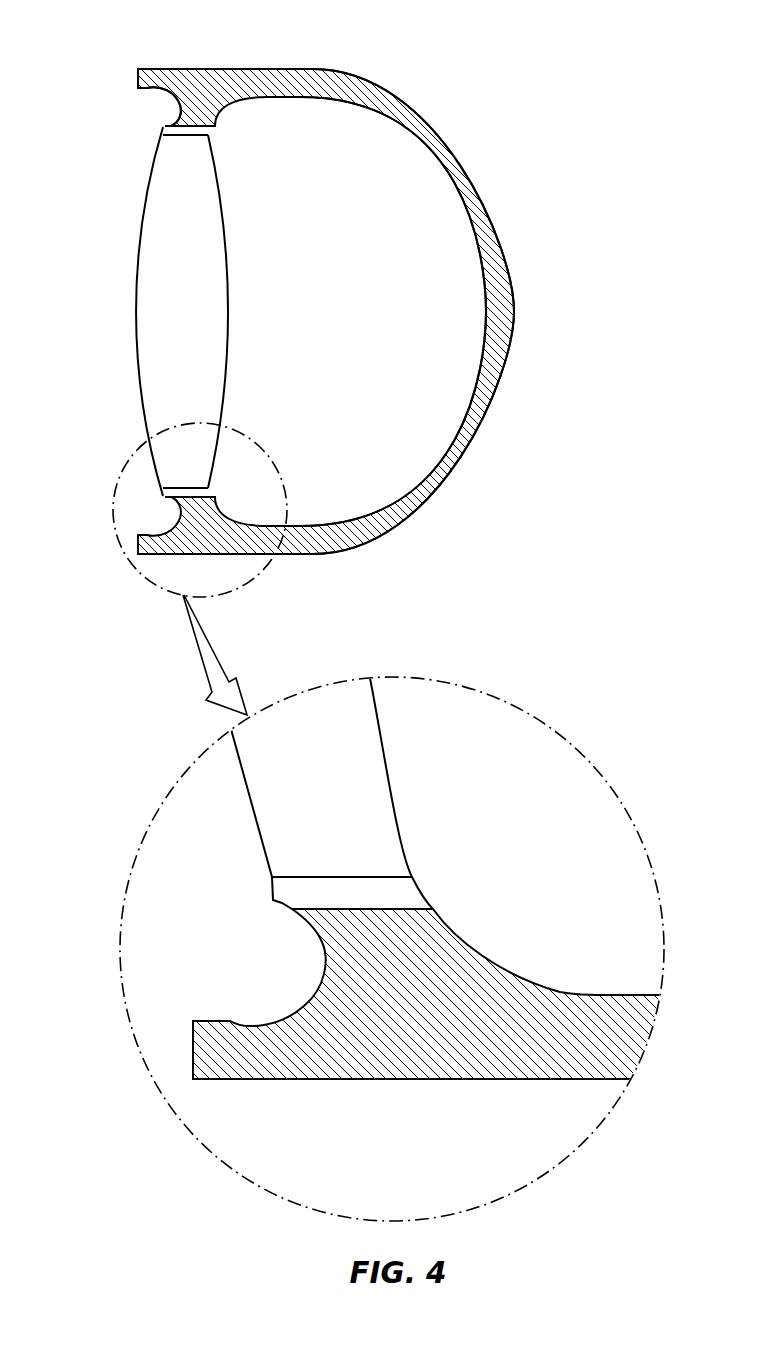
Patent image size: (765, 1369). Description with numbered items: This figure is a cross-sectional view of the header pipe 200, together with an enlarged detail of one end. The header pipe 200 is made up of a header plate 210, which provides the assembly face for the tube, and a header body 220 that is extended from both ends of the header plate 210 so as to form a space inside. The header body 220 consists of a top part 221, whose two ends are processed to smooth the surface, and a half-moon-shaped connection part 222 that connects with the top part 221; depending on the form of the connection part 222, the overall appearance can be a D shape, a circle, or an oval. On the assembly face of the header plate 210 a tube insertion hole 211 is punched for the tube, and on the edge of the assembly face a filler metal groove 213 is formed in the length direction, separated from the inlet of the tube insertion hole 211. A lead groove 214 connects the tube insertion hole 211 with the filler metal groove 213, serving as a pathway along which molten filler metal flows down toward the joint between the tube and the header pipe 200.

The header pipe 200 is at (314, 366).
The header plate 210 is at (137, 300).
The tube insertion hole 211 is at (164, 393).
The filler metal groove 213 is at (165, 102).
The lead groove 214 is at (288, 893).
The header body 220 is at (320, 301).
The top part 221 is at (228, 69).
The connection part 222 is at (414, 500).